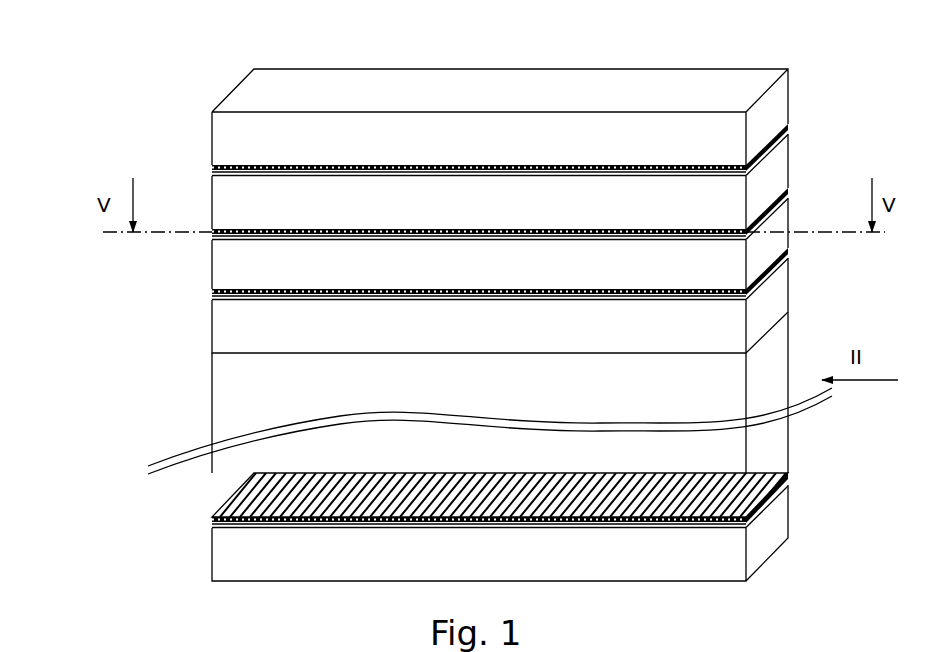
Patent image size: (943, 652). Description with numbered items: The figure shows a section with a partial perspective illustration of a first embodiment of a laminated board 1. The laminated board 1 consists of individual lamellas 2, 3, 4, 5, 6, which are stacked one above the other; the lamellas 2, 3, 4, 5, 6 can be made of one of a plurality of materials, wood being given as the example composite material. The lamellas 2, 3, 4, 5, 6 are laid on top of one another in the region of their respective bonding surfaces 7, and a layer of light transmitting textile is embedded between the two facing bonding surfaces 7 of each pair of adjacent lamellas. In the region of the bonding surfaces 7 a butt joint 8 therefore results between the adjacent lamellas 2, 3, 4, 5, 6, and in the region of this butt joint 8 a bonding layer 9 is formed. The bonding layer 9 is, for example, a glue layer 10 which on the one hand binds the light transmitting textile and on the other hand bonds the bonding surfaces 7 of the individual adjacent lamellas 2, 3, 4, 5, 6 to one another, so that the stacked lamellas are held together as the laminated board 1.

The laminated board 1 is at (448, 324).
The lamella 2 is at (728, 82).
The lamella 3 is at (775, 175).
The lamella 4 is at (780, 218).
The lamella 5 is at (775, 305).
The lamella 6 is at (775, 525).
The bonding surface 7 is at (212, 170).
The butt joint 8 is at (500, 214).
The bonding layer 9 is at (500, 274).
The glue layer 10 is at (465, 166).